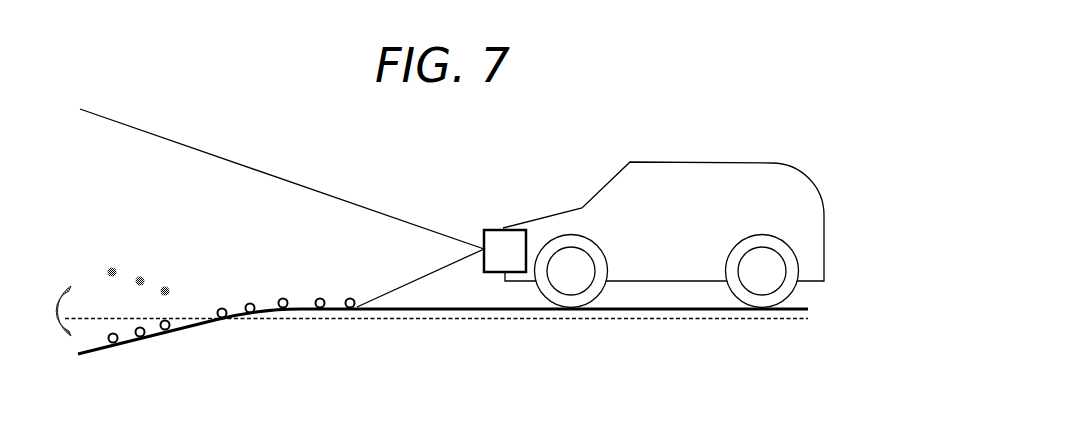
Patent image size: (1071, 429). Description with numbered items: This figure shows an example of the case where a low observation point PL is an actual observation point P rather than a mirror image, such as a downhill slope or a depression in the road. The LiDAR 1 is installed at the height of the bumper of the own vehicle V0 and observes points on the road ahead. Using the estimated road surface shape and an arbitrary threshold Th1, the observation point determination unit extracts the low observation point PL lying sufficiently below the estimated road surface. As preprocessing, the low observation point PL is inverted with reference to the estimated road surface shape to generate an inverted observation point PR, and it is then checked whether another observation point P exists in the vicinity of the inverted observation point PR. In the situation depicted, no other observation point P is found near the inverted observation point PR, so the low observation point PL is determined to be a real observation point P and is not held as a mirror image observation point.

The LiDAR 1 is at (497, 227).
The own vehicle V0 is at (635, 152).
The observation point P is at (283, 297).
The low observation point PL is at (114, 345).
The inverted observation point PR is at (111, 267).
The threshold Th1 is at (325, 322).